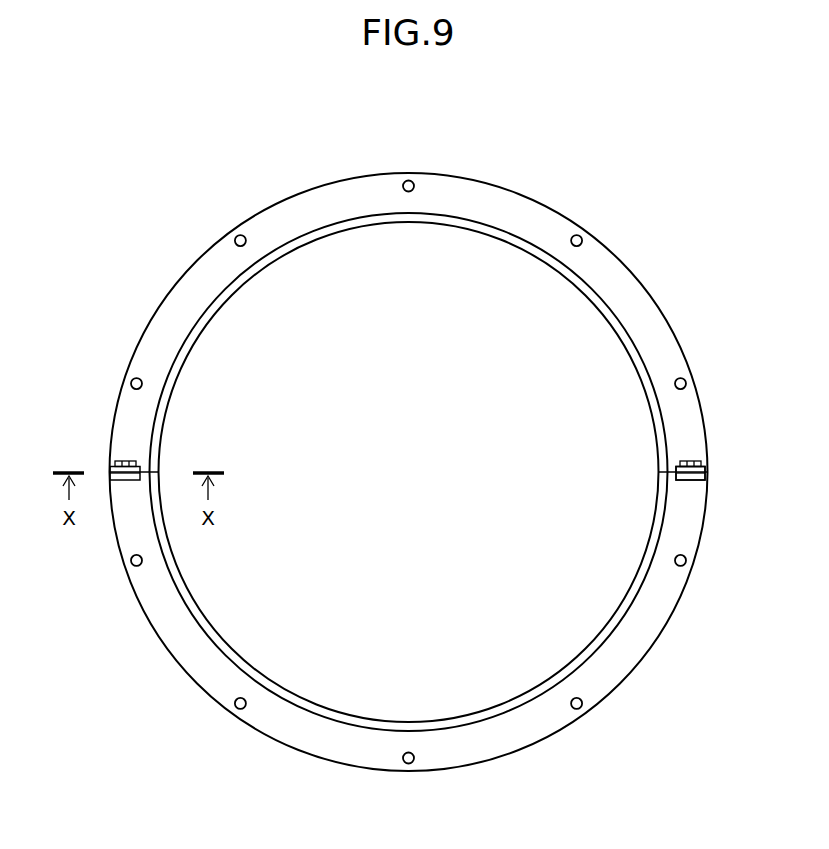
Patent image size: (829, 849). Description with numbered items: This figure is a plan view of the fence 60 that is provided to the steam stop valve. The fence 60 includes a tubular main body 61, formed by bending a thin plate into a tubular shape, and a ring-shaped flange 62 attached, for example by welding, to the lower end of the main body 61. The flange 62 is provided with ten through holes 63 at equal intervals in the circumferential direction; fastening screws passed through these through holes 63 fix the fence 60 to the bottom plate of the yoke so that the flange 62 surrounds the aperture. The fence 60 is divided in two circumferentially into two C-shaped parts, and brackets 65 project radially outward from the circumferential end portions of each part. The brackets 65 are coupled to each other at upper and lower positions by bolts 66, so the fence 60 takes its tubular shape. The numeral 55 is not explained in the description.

The sensor unit 55 is at (705, 471).
The fence 60 is at (406, 171).
The main body 61 is at (425, 224).
The flange 62 is at (680, 339).
The through holes 63 is at (578, 705).
The brackets 65 is at (112, 470).
The bolts 66 is at (127, 460).